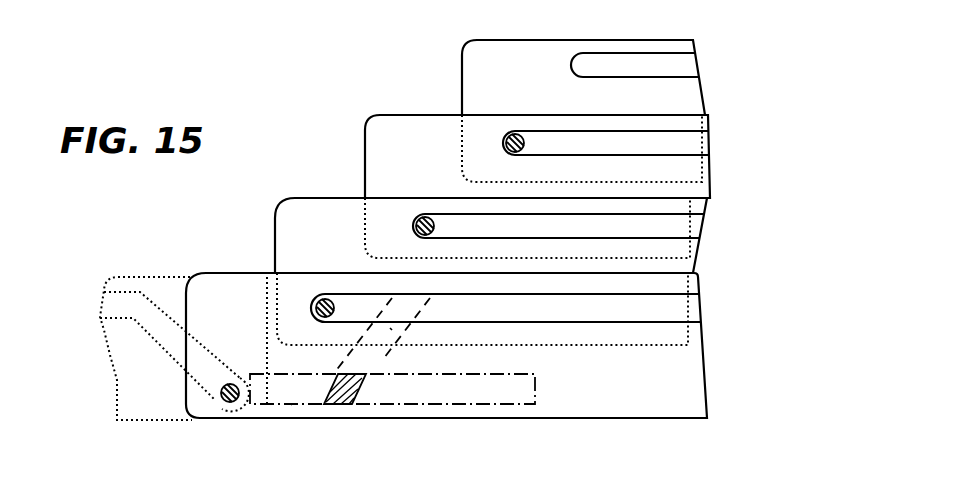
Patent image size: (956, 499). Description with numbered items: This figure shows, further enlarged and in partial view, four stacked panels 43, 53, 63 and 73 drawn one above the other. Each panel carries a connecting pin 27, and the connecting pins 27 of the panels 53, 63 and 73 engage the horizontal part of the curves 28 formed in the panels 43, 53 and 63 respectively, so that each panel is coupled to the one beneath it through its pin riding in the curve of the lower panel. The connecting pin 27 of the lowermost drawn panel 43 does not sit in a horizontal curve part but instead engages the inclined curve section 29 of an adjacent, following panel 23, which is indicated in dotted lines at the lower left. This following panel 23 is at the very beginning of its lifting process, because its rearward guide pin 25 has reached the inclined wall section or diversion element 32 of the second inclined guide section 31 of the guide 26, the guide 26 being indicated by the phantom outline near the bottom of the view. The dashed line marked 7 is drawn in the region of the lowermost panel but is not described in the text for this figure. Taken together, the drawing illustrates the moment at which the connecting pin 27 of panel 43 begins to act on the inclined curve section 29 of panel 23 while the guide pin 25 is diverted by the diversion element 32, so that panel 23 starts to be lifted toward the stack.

The blade 7 is at (400, 281).
The adjacent following panel 23 is at (132, 277).
The rearward guide pin 25 is at (340, 405).
The guide 26 is at (291, 405).
The connecting pin 27 is at (508, 138).
The curve 28 is at (604, 62).
The inclined curve section 29 is at (156, 312).
The second inclined guide section 31 is at (390, 328).
The inclined wall section or diversion element 32 is at (366, 400).
The panel 43 is at (219, 277).
The panel 53 is at (307, 212).
The panel 63 is at (385, 117).
The panel 73 is at (490, 62).